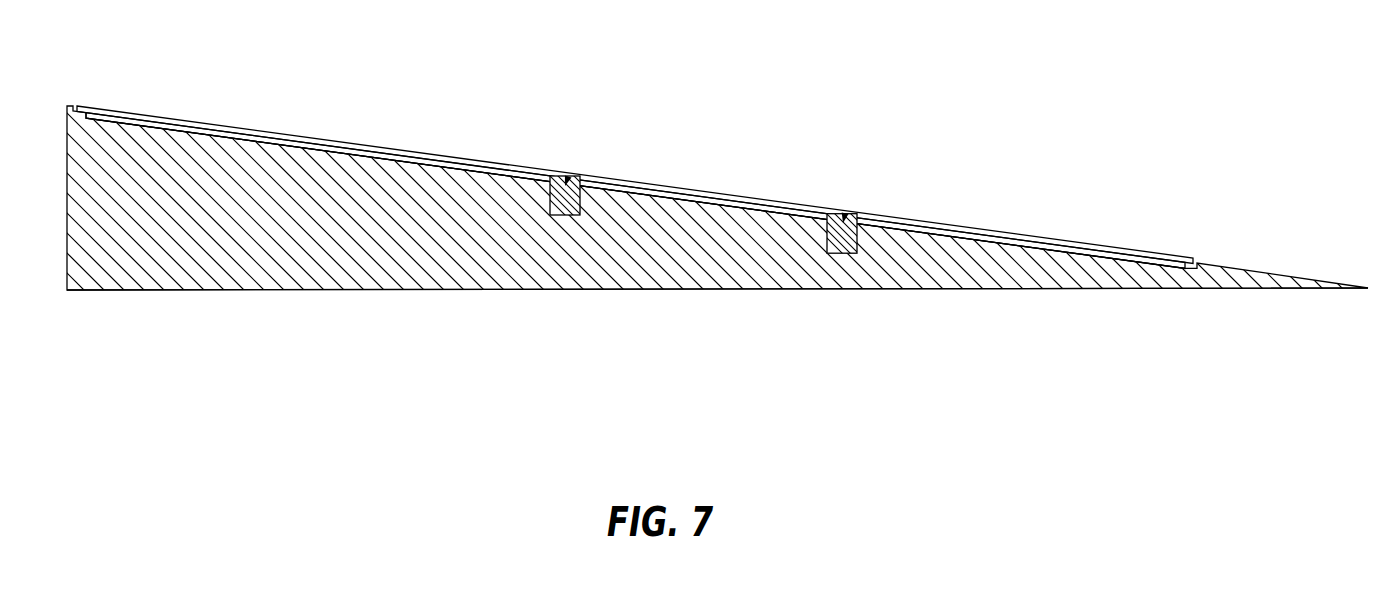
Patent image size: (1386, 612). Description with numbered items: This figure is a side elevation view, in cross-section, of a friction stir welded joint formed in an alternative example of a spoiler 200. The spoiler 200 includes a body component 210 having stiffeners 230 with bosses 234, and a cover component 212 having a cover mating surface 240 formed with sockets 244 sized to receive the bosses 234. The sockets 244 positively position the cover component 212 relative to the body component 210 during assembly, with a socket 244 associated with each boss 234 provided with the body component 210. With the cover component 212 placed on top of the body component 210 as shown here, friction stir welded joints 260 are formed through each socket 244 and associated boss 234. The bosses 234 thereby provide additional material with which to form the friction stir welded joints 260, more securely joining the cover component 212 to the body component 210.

The spoiler 200 is at (289, 70).
The body component 210 is at (373, 294).
The cover component 212 is at (1031, 240).
The stiffeners 230 is at (681, 272).
The bosses 234 is at (553, 177).
The cover mating surface 240 is at (316, 147).
The sockets 244 is at (586, 196).
The friction stir welded joints 260 is at (566, 183).